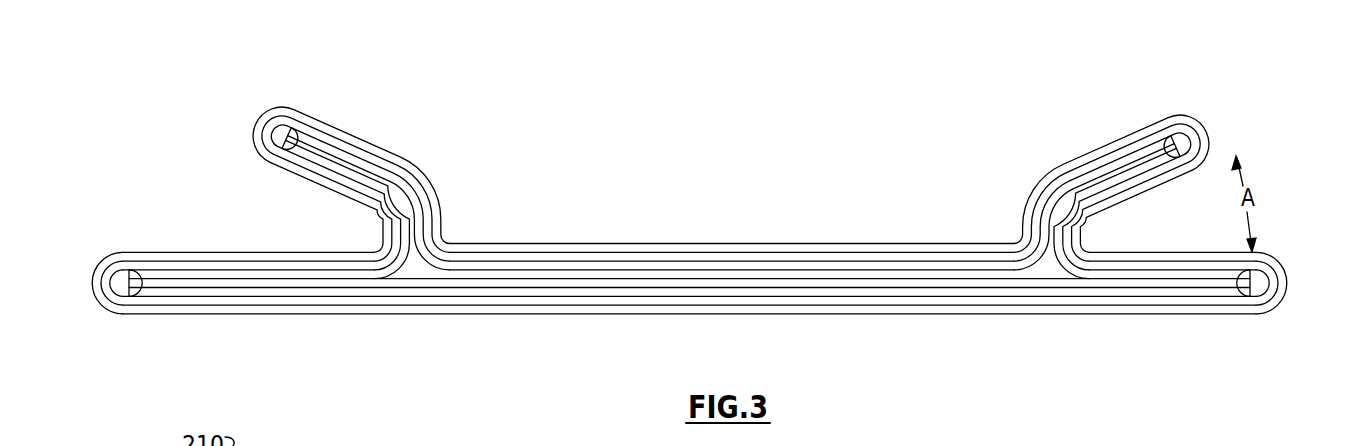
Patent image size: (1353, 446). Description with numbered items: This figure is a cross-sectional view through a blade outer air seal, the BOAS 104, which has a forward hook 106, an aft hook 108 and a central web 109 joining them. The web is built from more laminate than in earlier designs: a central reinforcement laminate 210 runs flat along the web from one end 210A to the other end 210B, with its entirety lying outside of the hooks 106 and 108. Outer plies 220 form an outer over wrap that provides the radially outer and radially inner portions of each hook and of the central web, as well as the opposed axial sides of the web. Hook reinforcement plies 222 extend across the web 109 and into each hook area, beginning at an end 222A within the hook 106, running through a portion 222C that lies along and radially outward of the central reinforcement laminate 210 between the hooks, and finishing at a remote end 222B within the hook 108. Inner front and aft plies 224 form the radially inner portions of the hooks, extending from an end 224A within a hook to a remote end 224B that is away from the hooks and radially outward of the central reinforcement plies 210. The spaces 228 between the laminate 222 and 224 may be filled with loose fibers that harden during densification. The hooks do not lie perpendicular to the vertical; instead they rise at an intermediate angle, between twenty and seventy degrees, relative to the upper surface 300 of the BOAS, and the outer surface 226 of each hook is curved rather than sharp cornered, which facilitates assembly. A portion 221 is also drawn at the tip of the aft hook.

The BOAS 104 is at (1010, 132).
The hook 106 is at (370, 133).
The hook 108 is at (1100, 146).
The central web 109 is at (713, 314).
The central reinforcement laminate 210 is at (427, 286).
The end of central reinforcement laminate 210A is at (113, 297).
The end of central reinforcement laminate 210B is at (1259, 297).
The outer plies 220 is at (531, 300).
The end portion 221 is at (1212, 122).
The hook reinforcement plies 222 is at (391, 168).
The end of hook reinforcement plies 222A is at (278, 118).
The remote end of hook reinforcement plies 222B is at (1195, 124).
The portion of hook reinforcement plies 222C is at (646, 243).
The inner front and aft plies 224 is at (343, 170).
The end of inner front and aft plies 224A is at (282, 126).
The remote end of inner front and aft plies 224B is at (113, 270).
The outer surface 226 is at (442, 197).
The spaces 228 is at (1040, 265).
The upper surface 300 is at (1177, 251).